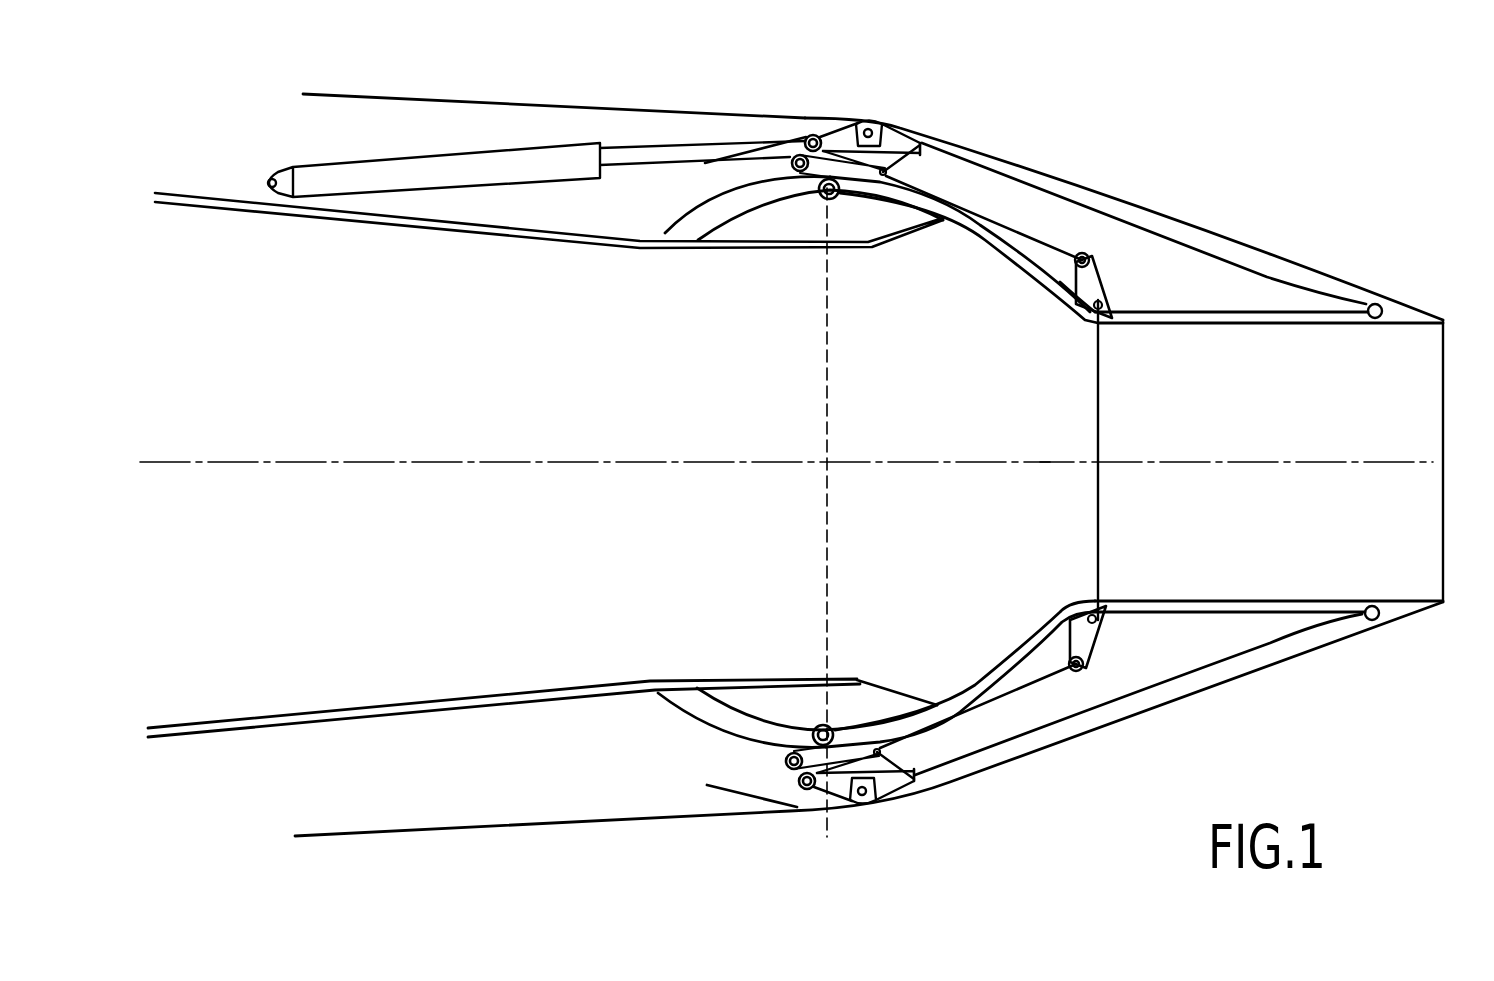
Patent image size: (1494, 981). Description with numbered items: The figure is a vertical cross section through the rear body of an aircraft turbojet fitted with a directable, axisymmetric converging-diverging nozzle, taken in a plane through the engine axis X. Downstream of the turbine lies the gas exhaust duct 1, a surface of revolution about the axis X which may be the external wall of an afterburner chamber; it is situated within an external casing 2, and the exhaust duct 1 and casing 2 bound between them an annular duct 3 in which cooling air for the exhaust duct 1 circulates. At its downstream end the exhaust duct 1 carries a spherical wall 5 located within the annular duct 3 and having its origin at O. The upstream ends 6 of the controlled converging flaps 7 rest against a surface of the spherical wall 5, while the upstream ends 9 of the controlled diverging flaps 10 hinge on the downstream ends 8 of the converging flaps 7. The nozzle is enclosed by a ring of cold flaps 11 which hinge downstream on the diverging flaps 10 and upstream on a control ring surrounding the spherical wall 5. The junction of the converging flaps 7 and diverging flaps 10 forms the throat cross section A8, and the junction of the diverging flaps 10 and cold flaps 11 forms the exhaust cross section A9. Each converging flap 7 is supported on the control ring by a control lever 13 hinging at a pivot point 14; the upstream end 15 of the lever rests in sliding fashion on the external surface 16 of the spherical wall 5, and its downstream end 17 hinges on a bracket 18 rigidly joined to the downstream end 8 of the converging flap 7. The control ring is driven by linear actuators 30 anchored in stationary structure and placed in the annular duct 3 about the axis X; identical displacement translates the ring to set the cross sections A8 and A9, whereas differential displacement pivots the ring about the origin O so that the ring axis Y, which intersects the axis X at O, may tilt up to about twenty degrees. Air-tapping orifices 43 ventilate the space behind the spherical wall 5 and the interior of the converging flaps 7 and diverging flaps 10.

The gas exhaust duct 1 is at (188, 207).
The external casing 2 is at (340, 97).
The annular duct 3 is at (482, 747).
The spherical wall 5 is at (687, 210).
The upstream end of converging flap 6 is at (830, 200).
The converging flap 7 is at (980, 233).
The downstream end of converging flap 8 is at (1080, 314).
The upstream end of diverging flap 9 is at (1110, 317).
The diverging flap 10 is at (1268, 320).
The cold flap 11 is at (1172, 223).
The control lever 13 is at (987, 200).
The pivot point 14 is at (883, 170).
The upstream end of control lever 15 is at (823, 160).
The external surface of spherical wall 16 is at (707, 203).
The downstream end of control lever 17 is at (1067, 250).
The bracket 18 is at (1093, 283).
The linear actuator 30 is at (443, 160).
The air-tapping orifice 43 is at (863, 200).
The axis X is at (213, 462).
The origin O is at (822, 468).
The axis of control ring Y is at (1045, 468).
The nozzle throat cross section A8 is at (1103, 492).
The exhaust cross section A9 is at (1450, 485).